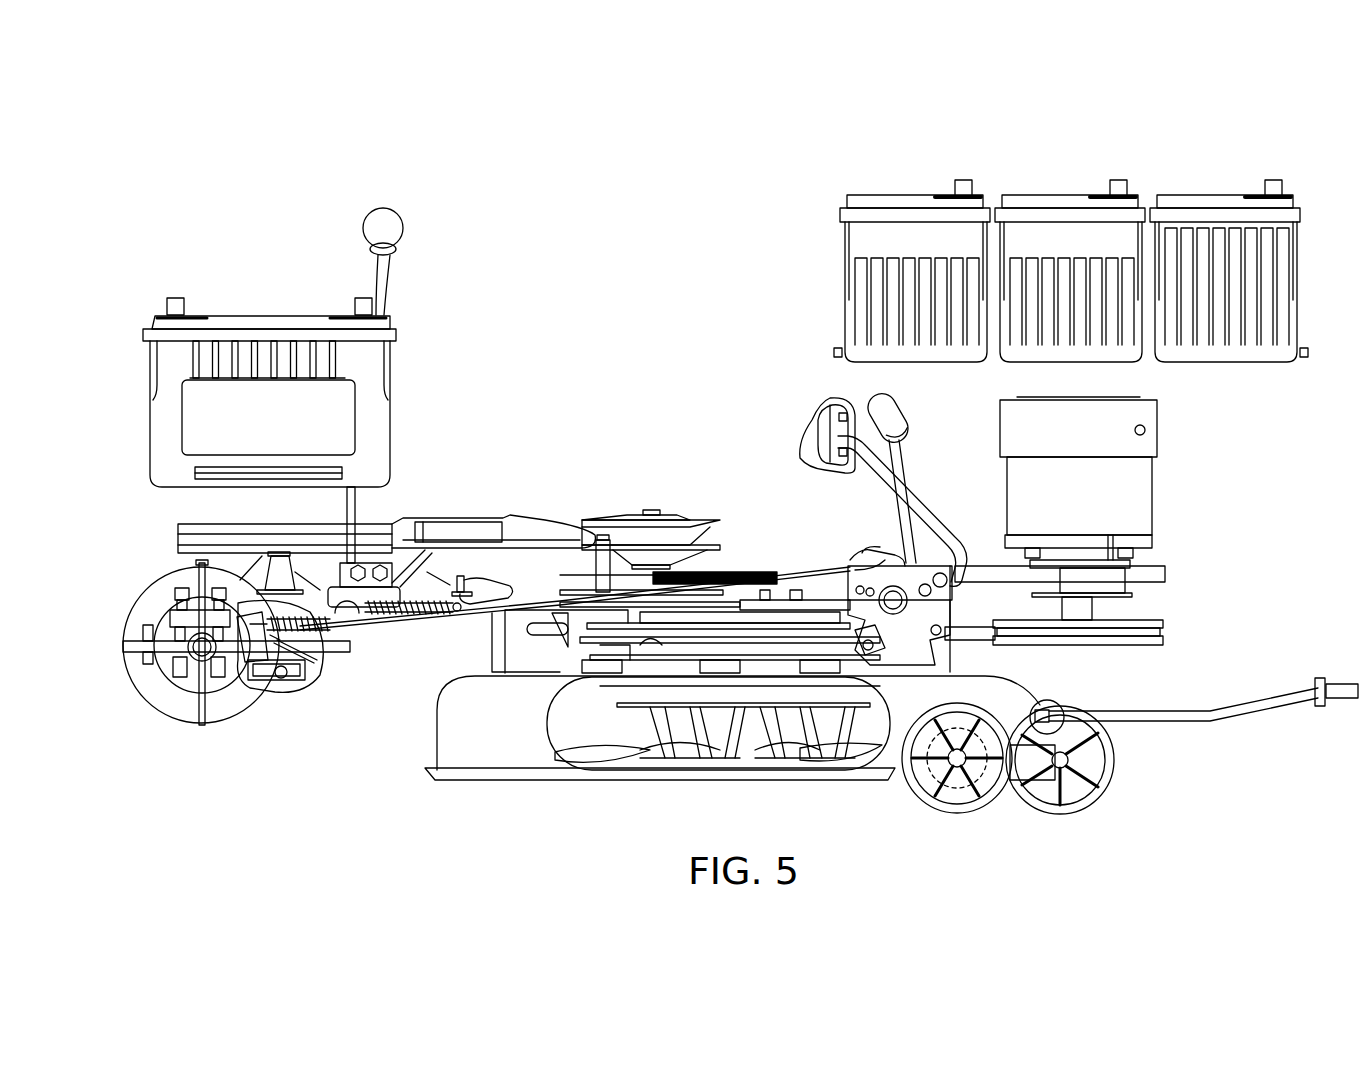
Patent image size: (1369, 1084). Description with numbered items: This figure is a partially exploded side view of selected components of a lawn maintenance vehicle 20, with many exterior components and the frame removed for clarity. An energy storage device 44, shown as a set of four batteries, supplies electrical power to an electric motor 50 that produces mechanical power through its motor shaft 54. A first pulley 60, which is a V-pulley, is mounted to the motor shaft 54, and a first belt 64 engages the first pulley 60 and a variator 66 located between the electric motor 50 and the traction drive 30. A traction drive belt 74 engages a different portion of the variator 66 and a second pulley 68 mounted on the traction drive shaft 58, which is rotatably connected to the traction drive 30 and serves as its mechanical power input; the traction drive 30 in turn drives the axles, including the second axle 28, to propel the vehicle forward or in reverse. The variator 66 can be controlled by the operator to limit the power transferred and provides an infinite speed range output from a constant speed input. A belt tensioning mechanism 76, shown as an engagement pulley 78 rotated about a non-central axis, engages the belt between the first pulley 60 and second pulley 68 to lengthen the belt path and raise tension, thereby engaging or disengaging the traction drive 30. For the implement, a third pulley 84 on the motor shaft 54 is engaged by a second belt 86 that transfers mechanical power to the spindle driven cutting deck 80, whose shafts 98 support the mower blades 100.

The lawn maintenance vehicle 20 is at (490, 165).
The second axle 28 is at (207, 660).
The traction drive 30 is at (125, 682).
The energy storage device 44 is at (152, 466).
The electric motor 50 is at (1157, 490).
The motor shaft 54 is at (1094, 612).
The traction drive shaft 58 is at (265, 555).
The first pulley 60 is at (1128, 592).
The first belt 64 is at (990, 562).
The variator 66 is at (705, 520).
The second pulley 68 is at (180, 524).
The traction drive belt 74 is at (542, 520).
The belt tensioning mechanism 76 is at (433, 598).
The engagement pulley 78 is at (510, 520).
The spindle driven cutting deck 80 is at (437, 735).
The third pulley 84 is at (1125, 648).
The second belt 86 is at (990, 640).
The shafts 98 is at (650, 730).
The mower blades 100 is at (625, 748).